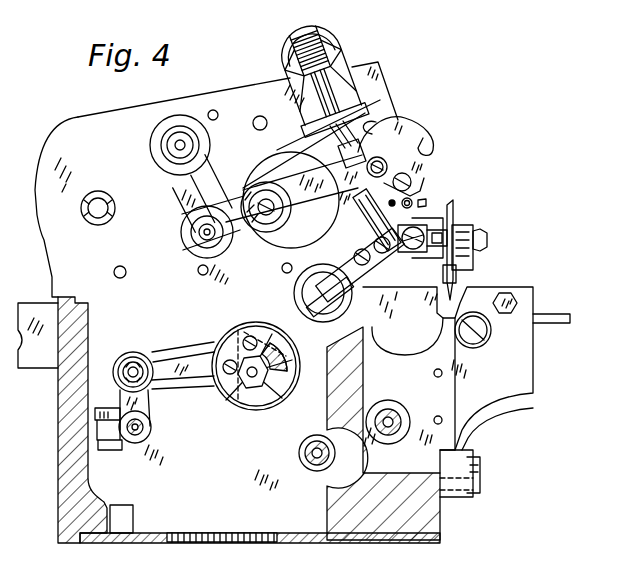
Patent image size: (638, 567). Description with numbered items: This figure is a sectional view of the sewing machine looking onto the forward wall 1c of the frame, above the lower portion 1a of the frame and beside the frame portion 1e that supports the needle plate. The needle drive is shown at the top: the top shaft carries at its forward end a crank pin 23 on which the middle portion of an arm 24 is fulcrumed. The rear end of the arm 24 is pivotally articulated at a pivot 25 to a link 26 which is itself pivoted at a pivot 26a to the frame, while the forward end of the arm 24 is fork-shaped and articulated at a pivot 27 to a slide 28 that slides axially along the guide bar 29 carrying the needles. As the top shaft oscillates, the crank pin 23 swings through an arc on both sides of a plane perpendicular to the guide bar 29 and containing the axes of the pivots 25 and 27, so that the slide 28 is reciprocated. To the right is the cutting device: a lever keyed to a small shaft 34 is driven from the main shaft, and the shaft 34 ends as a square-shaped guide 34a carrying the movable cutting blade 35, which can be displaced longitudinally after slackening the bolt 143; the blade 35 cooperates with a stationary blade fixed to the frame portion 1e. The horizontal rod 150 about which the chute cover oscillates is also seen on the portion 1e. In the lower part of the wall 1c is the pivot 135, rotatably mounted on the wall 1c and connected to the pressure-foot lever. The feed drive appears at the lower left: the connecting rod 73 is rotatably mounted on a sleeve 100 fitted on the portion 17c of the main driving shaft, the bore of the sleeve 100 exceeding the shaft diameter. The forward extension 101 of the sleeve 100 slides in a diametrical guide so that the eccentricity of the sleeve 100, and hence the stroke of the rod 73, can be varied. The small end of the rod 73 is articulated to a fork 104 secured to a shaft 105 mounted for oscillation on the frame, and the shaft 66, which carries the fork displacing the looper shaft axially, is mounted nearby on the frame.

The lower portion of the frame 1a is at (423, 532).
The forward wall of the frame 1c is at (67, 150).
The portion of the machine frame 1e is at (533, 355).
The portion of the main driving shaft 17c is at (253, 385).
The crank pin 23 is at (267, 217).
The arm 24 is at (268, 180).
The pivot 25 is at (207, 235).
The link 26 is at (176, 189).
The pivot of the link 26a is at (177, 145).
The pivot 27 is at (387, 164).
The slide 28 is at (362, 148).
The guide bar 29 is at (340, 110).
The small shaft 34 is at (364, 282).
The square-shaped guide 34a is at (445, 220).
The cutting blade 35 is at (467, 273).
The shaft 66 is at (392, 418).
The connecting rod 73 is at (174, 351).
The sleeve 100 is at (273, 363).
The forward extension 101 is at (233, 340).
The fork 104 is at (137, 403).
The shaft 105 is at (145, 443).
The pivot 135 is at (98, 192).
The bolt 143 is at (488, 240).
The horizontal rod 150 is at (473, 337).